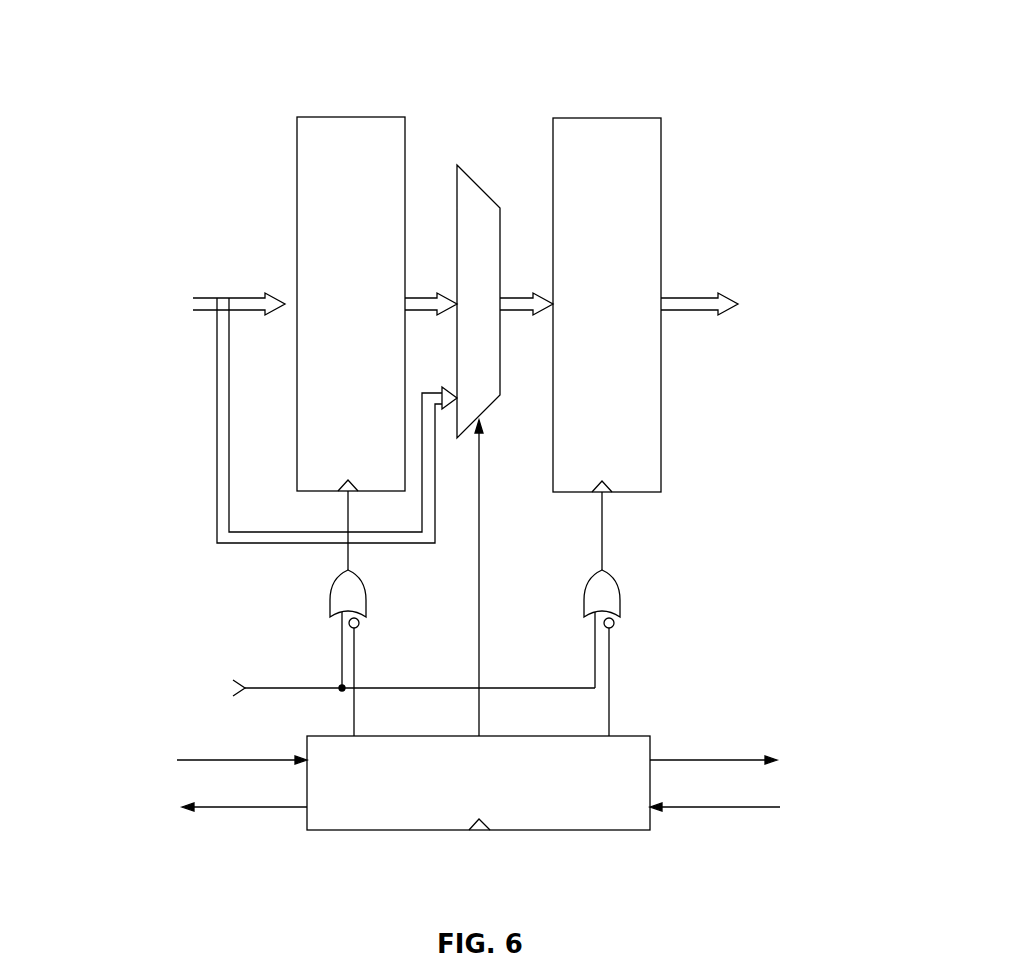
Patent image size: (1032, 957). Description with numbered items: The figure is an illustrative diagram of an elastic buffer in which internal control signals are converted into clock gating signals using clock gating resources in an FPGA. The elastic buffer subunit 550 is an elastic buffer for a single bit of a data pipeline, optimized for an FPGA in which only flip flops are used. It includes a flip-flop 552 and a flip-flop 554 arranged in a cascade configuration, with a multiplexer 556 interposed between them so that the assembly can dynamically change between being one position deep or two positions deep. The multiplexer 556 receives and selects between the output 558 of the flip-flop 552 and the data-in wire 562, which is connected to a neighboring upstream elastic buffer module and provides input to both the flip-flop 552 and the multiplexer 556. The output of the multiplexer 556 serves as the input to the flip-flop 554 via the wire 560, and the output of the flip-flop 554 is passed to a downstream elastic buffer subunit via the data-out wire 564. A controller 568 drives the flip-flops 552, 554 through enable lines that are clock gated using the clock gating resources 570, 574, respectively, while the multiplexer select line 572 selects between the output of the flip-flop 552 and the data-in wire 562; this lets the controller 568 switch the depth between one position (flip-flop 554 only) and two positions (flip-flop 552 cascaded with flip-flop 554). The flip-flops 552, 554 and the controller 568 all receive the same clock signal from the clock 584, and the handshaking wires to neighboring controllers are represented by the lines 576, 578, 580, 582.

The elastic buffer subunit 550 is at (206, 38).
The flip-flop 552 is at (358, 116).
The flip-flop 554 is at (614, 117).
The multiplexer 556 is at (477, 185).
The output of flip-flop 558 is at (413, 298).
The wire 560 is at (510, 298).
The data-in wire 562 is at (210, 298).
The data-out wire 564 is at (692, 298).
The controller 568 is at (355, 832).
The clock gating resource 570 is at (370, 595).
The multiplexer select line 572 is at (481, 657).
The clock gating resource 574 is at (622, 595).
The handshaking wire 576 is at (233, 760).
The handshaking wire 578 is at (250, 808).
The handshaking wire 580 is at (727, 758).
The handshaking wire 582 is at (702, 809).
The clock 584 is at (472, 835).